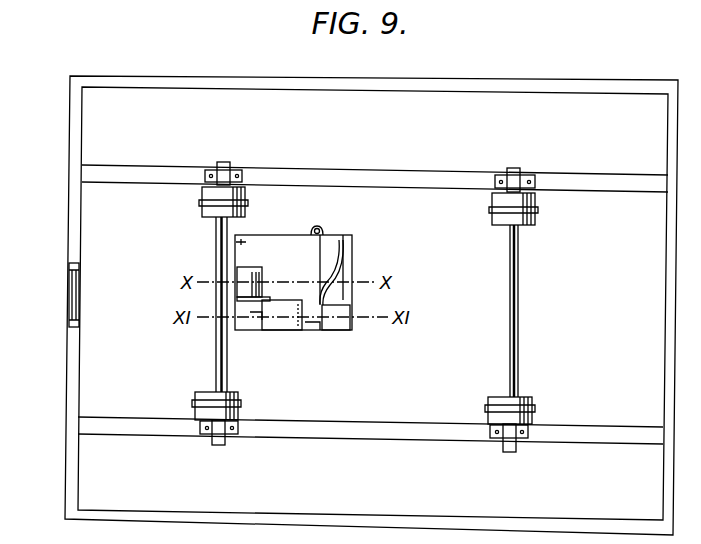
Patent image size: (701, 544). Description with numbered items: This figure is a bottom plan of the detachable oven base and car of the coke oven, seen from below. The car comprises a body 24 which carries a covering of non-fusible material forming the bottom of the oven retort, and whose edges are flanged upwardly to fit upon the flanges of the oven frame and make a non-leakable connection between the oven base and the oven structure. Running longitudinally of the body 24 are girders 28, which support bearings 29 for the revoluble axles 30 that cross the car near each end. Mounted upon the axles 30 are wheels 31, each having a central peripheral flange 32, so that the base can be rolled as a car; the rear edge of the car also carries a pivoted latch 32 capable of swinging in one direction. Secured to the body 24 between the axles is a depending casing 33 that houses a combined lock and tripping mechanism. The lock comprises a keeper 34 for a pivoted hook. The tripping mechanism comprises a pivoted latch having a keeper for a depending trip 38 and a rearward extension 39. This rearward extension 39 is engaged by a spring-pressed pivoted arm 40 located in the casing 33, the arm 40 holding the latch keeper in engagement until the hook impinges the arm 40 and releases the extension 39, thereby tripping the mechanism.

The body 24 is at (371, 305).
The girders 28 is at (400, 175).
The bearings 29 is at (535, 181).
The revoluble axles 30 is at (519, 284).
The wheels 31 is at (212, 214).
The central peripheral flanges 32 is at (249, 203).
The depending casing 33 is at (353, 250).
The keeper 34 is at (246, 273).
The depending trip 38 is at (250, 320).
The rearward extension 39 is at (290, 310).
The spring-pressed pivoted arm 40 is at (310, 268).